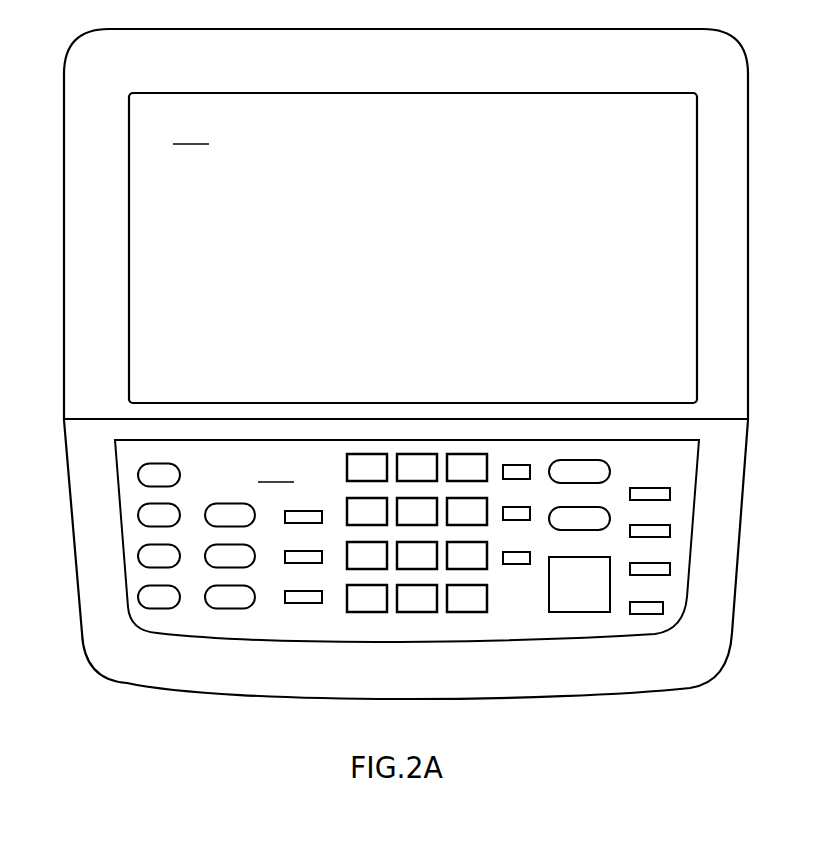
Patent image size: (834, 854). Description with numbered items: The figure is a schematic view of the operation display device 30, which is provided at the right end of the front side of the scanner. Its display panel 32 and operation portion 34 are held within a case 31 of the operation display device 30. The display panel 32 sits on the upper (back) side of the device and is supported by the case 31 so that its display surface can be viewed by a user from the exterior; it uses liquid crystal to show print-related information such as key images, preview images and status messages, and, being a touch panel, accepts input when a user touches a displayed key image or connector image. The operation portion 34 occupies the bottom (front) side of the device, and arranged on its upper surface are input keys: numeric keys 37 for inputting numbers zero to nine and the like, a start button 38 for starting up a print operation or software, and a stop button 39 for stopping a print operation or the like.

The operation display device 30 is at (447, 398).
The case 31 is at (748, 193).
The display panel 32 is at (672, 135).
The operation portion 34 is at (467, 591).
The numeric keys 37 is at (424, 626).
The start button 38 is at (585, 612).
The stop button 39 is at (610, 518).